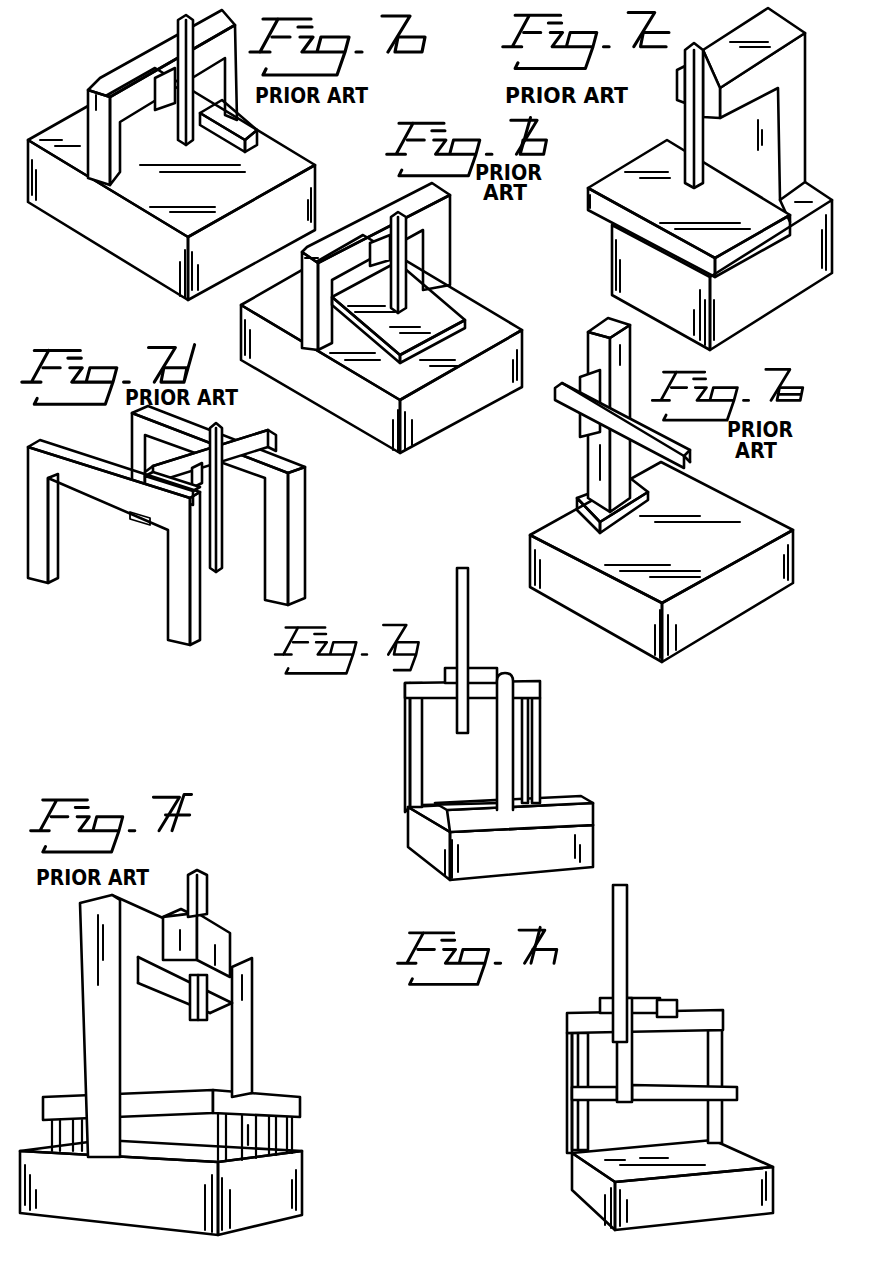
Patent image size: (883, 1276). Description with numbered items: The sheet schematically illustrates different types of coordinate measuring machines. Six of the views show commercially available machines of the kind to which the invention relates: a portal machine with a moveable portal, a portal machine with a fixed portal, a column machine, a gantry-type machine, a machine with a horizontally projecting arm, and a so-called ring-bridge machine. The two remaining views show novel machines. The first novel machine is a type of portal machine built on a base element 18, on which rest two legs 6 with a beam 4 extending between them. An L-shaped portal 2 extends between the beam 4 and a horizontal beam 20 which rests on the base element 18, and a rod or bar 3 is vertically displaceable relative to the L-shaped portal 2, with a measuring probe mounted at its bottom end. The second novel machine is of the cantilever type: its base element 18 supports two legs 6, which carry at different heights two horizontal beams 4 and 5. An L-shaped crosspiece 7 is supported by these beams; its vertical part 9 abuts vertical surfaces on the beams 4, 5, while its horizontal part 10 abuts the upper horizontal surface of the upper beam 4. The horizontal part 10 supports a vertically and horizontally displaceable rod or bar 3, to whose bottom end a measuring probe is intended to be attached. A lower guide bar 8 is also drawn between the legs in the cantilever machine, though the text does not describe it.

In FIG. 7G, the L-shaped portal 2 is at (505, 675).
In FIG. 7G, the rod or bar 3 is at (468, 598).
In FIG. 7H, the rod or bar 3 is at (627, 918).
In FIG. 7G, the beam 4 is at (437, 684).
In FIG. 7H, the beam 4 is at (587, 1014).
In FIG. 7H, the horizontal beam 5 is at (727, 1083).
In FIG. 7G, the legs 6 is at (410, 737).
In FIG. 7H, the legs 6 is at (572, 1060).
In FIG. 7H, the L-shaped crosspiece 7 is at (659, 1000).
In FIG. 7H, the lower guide bar 8 is at (606, 1101).
In FIG. 7H, the vertical part 9 is at (632, 1057).
In FIG. 7H, the horizontal part 10 is at (671, 1006).
In FIG. 7G, the base element 18 is at (415, 818).
In FIG. 7H, the base element 18 is at (580, 1193).
In FIG. 7G, the horizontal beam 20 is at (568, 808).